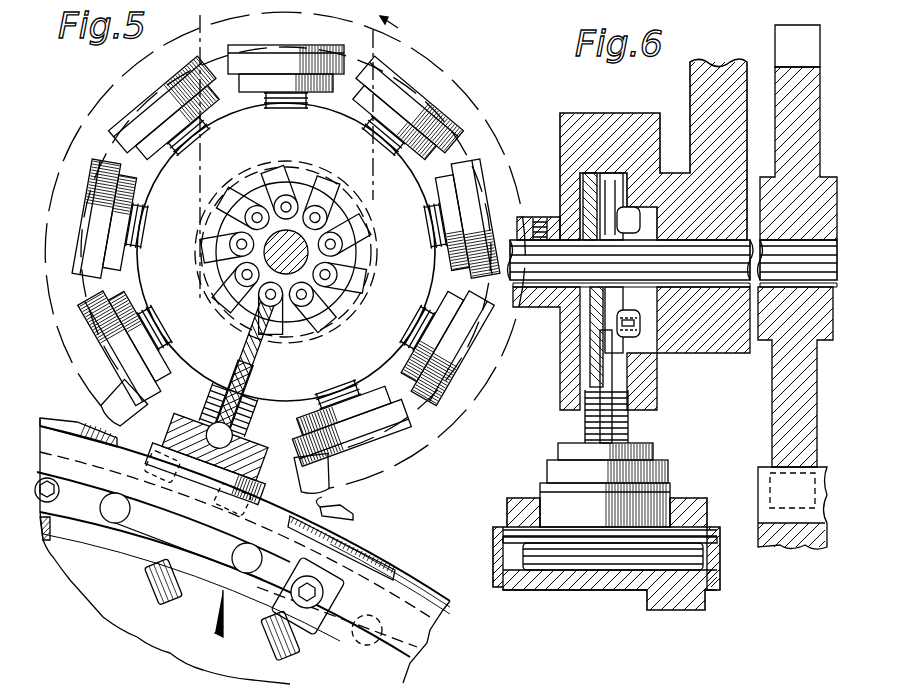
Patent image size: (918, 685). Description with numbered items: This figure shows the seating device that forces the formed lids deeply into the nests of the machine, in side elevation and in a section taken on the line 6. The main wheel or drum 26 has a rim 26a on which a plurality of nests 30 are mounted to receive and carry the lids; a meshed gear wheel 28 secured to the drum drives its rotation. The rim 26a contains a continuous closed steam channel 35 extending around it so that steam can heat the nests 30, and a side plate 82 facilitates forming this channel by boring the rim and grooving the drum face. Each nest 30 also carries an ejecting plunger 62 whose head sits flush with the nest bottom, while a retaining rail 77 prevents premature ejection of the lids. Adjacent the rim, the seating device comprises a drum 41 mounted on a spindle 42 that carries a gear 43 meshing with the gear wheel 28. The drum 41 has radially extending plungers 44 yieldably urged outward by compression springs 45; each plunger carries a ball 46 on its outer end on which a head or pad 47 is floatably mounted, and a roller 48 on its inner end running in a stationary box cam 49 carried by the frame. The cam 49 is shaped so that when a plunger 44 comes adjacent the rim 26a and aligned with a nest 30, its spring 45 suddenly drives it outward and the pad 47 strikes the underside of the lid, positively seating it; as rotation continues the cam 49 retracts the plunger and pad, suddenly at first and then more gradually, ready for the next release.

In FIG. 5, the section line 6— 6 is at (308, 336).
In FIG. 5, the drum 26 is at (103, 613).
In FIG. 6, the drum 26 is at (703, 597).
In FIG. 5, the rim 26a is at (212, 585).
In FIG. 6, the rim 26a is at (537, 587).
In FIG. 5, the gear wheel 28 is at (356, 519).
In FIG. 6, the gear wheel 28 is at (780, 540).
In FIG. 5, the nest 30 is at (66, 425).
In FIG. 6, the nest 30 is at (557, 490).
In FIG. 5, the steam channel 35 is at (143, 527).
In FIG. 6, the steam channel 35 is at (598, 560).
In FIG. 5, the drum 41 is at (398, 184).
In FIG. 6, the drum 41 is at (575, 125).
In FIG. 5, the spindle 42 is at (322, 240).
In FIG. 6, the spindle 42 is at (562, 287).
In FIG. 5, the gear 43 is at (112, 387).
In FIG. 6, the gear 43 is at (772, 414).
In FIG. 5, the plunger 44 is at (360, 282).
In FIG. 6, the plunger 44 is at (580, 182).
In FIG. 5, the compression spring 45 is at (210, 395).
In FIG. 6, the compression spring 45 is at (583, 423).
In FIG. 5, the ball 46 is at (233, 434).
In FIG. 5, the head or pad 47 is at (93, 220).
In FIG. 6, the head or pad 47 is at (558, 467).
In FIG. 5, the roller 48 is at (282, 314).
In FIG. 6, the roller 48 is at (650, 203).
In FIG. 5, the box cam 49 is at (322, 294).
In FIG. 6, the box cam 49 is at (683, 327).
In FIG. 5, the plunger 62 is at (150, 583).
In FIG. 5, the retaining rail 77 is at (423, 575).
In FIG. 5, the side plate 82 is at (72, 520).
In FIG. 6, the side plate 82 is at (497, 530).